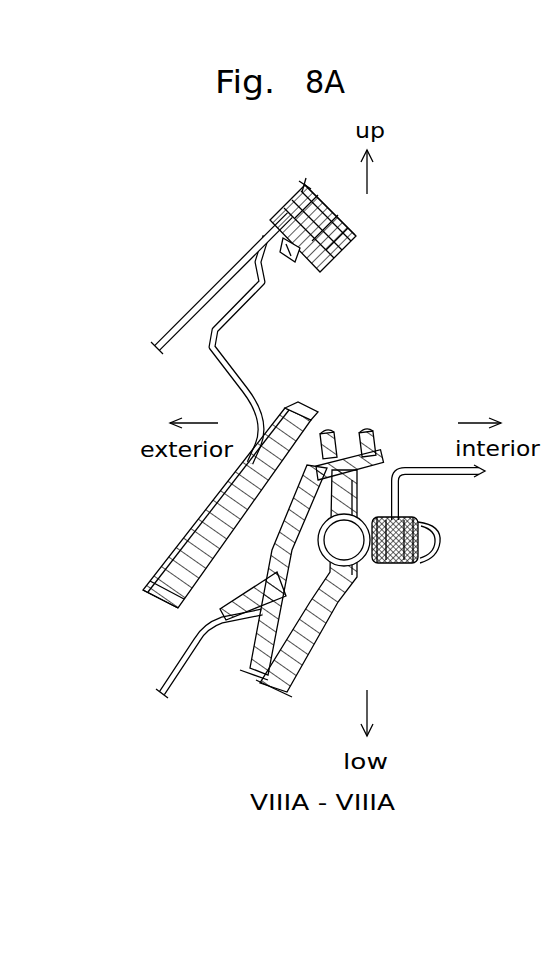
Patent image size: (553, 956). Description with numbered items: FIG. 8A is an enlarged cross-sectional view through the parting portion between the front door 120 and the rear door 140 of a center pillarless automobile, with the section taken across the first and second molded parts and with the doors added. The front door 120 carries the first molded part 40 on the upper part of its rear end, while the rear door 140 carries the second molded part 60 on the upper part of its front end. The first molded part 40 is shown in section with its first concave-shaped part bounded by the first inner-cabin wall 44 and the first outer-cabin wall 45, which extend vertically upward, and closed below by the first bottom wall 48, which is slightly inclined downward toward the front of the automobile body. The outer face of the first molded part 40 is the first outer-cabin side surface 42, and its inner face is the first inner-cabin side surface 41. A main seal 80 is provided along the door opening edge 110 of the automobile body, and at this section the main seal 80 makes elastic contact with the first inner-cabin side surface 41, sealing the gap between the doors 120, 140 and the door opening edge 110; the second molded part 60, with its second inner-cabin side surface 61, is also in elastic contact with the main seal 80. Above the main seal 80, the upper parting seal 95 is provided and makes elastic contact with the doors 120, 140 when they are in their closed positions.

The first molded part 40 is at (332, 522).
The first inner-cabin side surface 41 is at (360, 498).
The first outer-cabin side surface 42 is at (278, 516).
The first inner-cabin wall 44 is at (370, 432).
The first outer-cabin wall 45 is at (321, 433).
The first bottom wall 48 is at (343, 452).
The second molded part 60 is at (292, 399).
The second inner-cabin side surface 61 is at (192, 607).
The main seal 80 is at (428, 565).
The upper parting seal 95 is at (300, 196).
The door opening edge 110 is at (352, 232).
The front door 120 is at (172, 665).
The rear door 140 is at (212, 298).